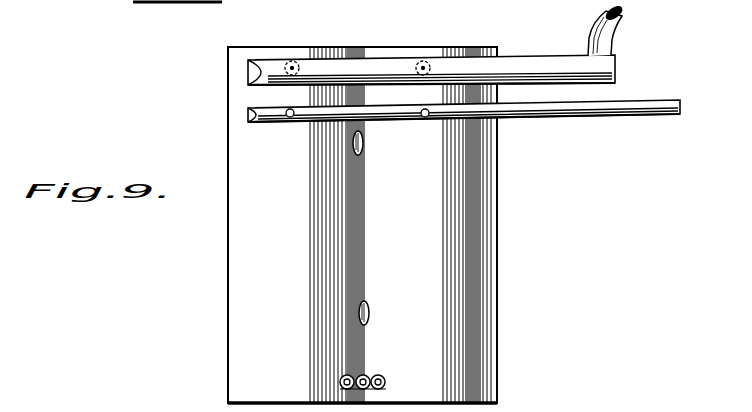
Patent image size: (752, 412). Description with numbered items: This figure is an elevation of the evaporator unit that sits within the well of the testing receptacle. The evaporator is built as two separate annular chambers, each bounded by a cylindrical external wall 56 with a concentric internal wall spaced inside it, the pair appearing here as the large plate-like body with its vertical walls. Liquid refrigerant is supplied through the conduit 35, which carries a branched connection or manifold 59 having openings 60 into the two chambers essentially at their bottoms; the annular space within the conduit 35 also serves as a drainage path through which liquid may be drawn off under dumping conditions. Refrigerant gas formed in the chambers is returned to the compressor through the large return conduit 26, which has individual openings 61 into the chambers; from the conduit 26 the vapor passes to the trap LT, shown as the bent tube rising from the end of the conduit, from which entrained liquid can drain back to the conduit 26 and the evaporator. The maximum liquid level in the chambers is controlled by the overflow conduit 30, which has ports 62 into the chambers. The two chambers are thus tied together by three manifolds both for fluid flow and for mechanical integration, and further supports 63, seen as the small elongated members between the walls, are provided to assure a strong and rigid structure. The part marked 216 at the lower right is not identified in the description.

The cylindrical external wall 56 is at (362, 225).
The return conduit 26 is at (562, 58).
The overflow conduit 30 is at (663, 93).
The opening 61 is at (294, 61).
The port 62 is at (289, 118).
The support 63 is at (365, 148).
The branched connection or manifold 59 is at (368, 373).
The opening 60 is at (385, 378).
The conduit 35 is at (387, 389).
The member 216 is at (470, 411).
The trap LT is at (615, 34).